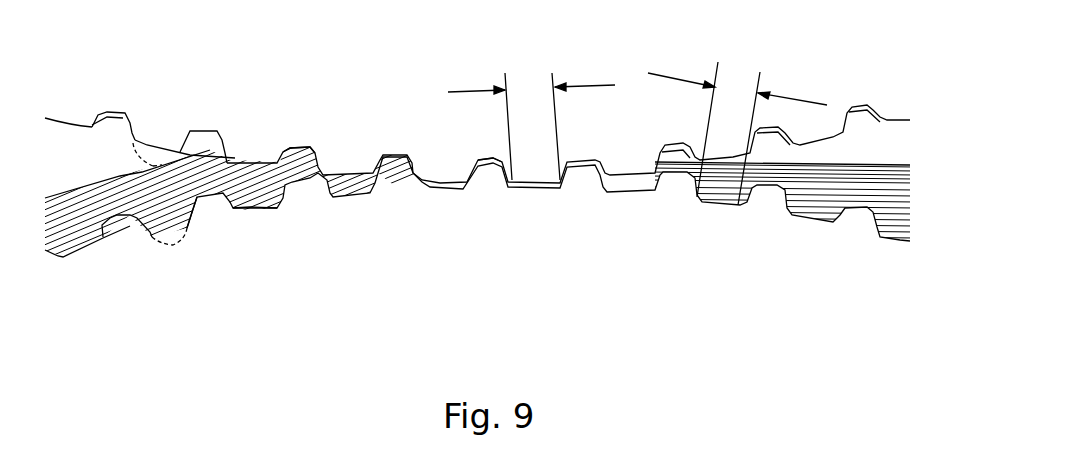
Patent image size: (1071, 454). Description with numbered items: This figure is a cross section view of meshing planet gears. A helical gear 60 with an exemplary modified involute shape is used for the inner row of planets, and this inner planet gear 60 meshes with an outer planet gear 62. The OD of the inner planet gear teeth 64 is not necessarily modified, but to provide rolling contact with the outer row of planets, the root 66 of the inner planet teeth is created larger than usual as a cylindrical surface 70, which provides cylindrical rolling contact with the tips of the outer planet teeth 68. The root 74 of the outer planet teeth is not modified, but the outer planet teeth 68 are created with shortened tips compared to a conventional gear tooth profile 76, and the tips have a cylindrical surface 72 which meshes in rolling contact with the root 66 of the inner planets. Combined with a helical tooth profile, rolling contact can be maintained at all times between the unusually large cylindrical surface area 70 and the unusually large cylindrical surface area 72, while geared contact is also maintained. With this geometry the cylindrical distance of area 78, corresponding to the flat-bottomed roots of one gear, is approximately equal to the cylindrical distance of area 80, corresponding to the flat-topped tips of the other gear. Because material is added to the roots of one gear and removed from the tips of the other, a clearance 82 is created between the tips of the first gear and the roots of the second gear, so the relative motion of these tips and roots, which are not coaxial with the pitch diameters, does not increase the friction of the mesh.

The helical gear 60 is at (458, 313).
The outer planet gear 62 is at (454, 42).
The inner planet gear teeth 64 is at (108, 238).
The root of the inner planet teeth 66 is at (190, 224).
The outer planet teeth 68 is at (132, 142).
The cylindrical surface 70 is at (188, 233).
The cylindrical surface 72 is at (153, 140).
The root of the outer planet teeth 74 is at (393, 147).
The conventional gear tooth profile 76 is at (150, 168).
The area corresponding to flat-bottomed roots 78 is at (737, 133).
The area corresponding to flat-topped tips 80 is at (531, 126).
The clearance 82 is at (487, 162).